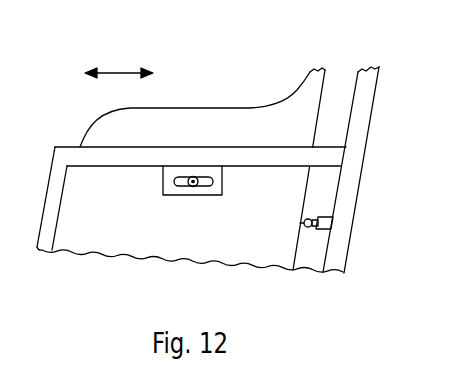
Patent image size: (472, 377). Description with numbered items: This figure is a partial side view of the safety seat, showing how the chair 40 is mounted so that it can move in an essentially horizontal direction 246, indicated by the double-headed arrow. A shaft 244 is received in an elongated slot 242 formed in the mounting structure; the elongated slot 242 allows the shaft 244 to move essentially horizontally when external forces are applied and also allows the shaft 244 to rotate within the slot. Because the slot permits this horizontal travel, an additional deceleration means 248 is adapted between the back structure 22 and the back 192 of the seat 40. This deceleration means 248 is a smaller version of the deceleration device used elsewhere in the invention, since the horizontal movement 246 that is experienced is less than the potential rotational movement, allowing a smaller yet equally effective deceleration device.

The back structure 22 is at (374, 97).
The chair 40 is at (191, 157).
The back 192 is at (319, 106).
The elongated slot 242 is at (208, 187).
The shaft 244 is at (191, 187).
The horizontal direction 246 is at (105, 68).
The deceleration means 248 is at (318, 229).